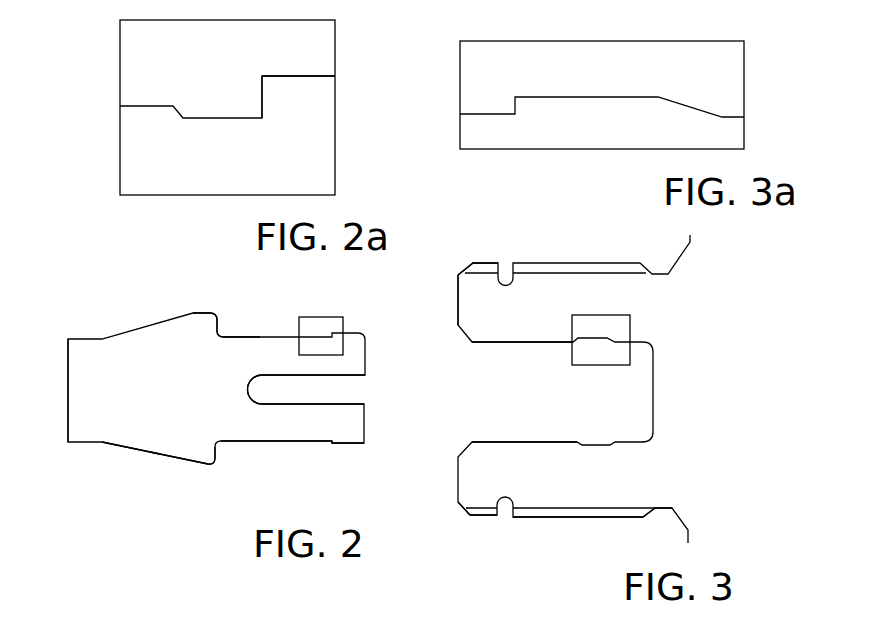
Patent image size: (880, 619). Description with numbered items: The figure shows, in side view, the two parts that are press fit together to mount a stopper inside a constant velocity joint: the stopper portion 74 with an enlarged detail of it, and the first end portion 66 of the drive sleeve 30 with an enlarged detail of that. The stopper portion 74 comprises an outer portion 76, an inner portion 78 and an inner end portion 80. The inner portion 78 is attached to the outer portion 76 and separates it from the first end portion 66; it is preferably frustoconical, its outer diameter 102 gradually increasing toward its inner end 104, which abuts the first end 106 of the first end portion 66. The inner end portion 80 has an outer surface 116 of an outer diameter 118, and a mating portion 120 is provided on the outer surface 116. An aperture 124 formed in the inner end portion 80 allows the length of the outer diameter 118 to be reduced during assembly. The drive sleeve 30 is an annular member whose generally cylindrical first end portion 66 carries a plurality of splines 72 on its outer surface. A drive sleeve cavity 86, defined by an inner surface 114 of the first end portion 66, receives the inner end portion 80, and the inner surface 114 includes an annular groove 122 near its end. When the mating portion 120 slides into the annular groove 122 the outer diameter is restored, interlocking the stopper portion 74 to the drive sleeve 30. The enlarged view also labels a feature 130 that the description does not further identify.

In FIG. 3, the drive sleeve 30 is at (520, 585).
In FIG. 3, the first end portion 66 is at (572, 495).
In FIG. 3, the splines 72 is at (468, 518).
In FIG. 2, the stopper portion 74 is at (100, 535).
In FIG. 2, the outer portion 76 is at (80, 432).
In FIG. 2, the inner portion 78 is at (170, 452).
In FIG. 2, the inner end portion 80 is at (317, 432).
In FIG. 3, the drive sleeve cavity 86 is at (530, 381).
In FIG. 2, the outer diameter 102 is at (123, 448).
In FIG. 2, the inner end 104 is at (213, 465).
In FIG. 3, the first end 106 is at (458, 302).
In FIG. 3, the inner surface 114 is at (485, 437).
In FIG. 2a, the outer surface 116 is at (310, 75).
In FIG. 2, the outer surface 116 is at (253, 445).
In FIG. 2, the outer diameter 118 is at (250, 335).
In FIG. 2a, the mating portion 120 is at (262, 97).
In FIG. 2, the mating portion 120 is at (331, 305).
In FIG. 3a, the annular groove 122 is at (587, 96).
In FIG. 3, the annular groove 122 is at (590, 373).
In FIG. 2, the aperture 124 is at (333, 399).
In FIG. 2a, the recess 130 is at (142, 115).